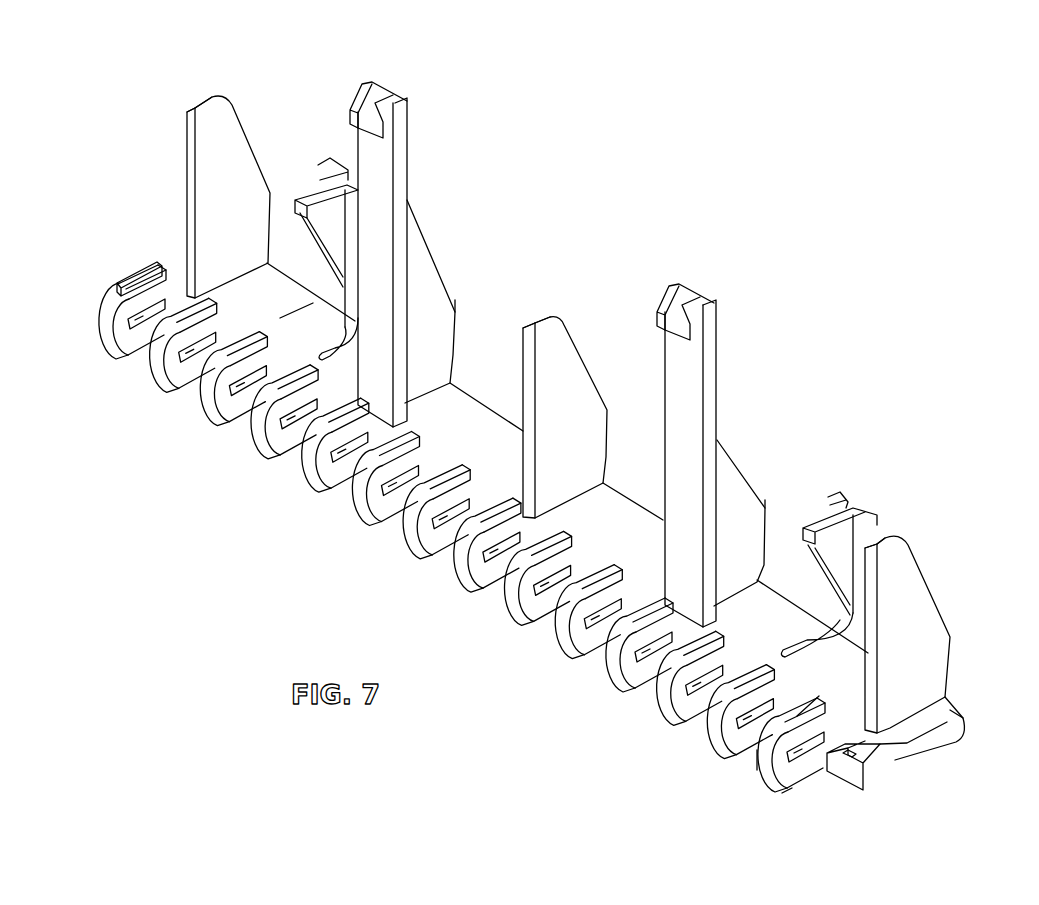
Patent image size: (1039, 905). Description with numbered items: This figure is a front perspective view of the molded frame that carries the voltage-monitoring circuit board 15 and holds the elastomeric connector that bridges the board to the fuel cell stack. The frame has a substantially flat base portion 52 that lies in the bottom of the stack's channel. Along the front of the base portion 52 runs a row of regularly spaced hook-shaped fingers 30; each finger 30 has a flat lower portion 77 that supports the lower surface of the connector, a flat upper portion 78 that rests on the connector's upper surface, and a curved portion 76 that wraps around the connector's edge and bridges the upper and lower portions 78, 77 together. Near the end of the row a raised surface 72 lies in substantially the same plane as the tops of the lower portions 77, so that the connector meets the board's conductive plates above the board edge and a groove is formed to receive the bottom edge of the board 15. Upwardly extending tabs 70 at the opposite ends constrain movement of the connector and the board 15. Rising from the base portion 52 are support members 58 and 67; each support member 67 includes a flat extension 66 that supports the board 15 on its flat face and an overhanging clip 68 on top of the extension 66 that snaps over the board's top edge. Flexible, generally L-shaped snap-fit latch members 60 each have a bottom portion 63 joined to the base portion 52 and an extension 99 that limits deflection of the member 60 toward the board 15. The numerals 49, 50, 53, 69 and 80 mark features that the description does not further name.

The circuit board 15 is at (762, 393).
The hook-shaped finger 30 is at (578, 655).
The fin top edge 49 is at (242, 116).
The fin / wall 50 is at (250, 157).
The base portion 52 is at (607, 492).
The fin front edge 53 is at (187, 188).
The support member 58 is at (432, 298).
The snap-fit latch member 60 is at (343, 167).
The bottom portion 63 is at (327, 172).
The flat extension 66 is at (388, 167).
The support member 67 is at (423, 210).
The overhanging clip 68 is at (378, 80).
The hook notch 69 is at (398, 103).
The upwardly extending tab 70 is at (133, 260).
The raised surface 72 is at (852, 752).
The curved portion 76 is at (753, 777).
The lower portion 77 is at (800, 773).
The upper portion 78 is at (747, 757).
The base end edge 80 is at (900, 742).
The extension 99 is at (312, 248).